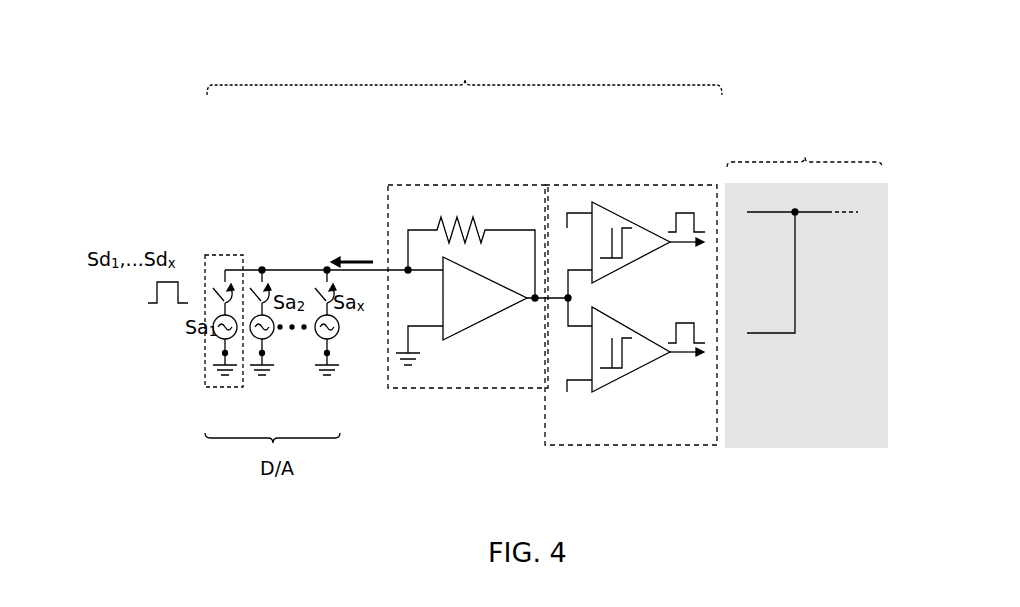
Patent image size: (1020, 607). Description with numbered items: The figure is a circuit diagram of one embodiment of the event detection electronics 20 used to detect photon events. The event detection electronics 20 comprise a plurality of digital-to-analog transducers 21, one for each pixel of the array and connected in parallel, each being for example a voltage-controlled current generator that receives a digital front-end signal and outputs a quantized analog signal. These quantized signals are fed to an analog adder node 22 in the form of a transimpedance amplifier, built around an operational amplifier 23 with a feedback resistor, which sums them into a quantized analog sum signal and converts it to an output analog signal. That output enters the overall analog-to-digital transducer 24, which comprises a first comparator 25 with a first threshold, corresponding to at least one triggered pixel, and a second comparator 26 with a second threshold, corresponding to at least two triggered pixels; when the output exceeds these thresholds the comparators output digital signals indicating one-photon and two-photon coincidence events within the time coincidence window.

The event detection electronics 20 is at (465, 79).
The digital-to-analog transducer 21 is at (220, 340).
The analog adder node 22 is at (463, 184).
The operational amplifier 23 is at (473, 327).
The overall analog-to-digital transducer 24 is at (570, 184).
The first comparator 25 is at (620, 213).
The second comparator 26 is at (617, 373).